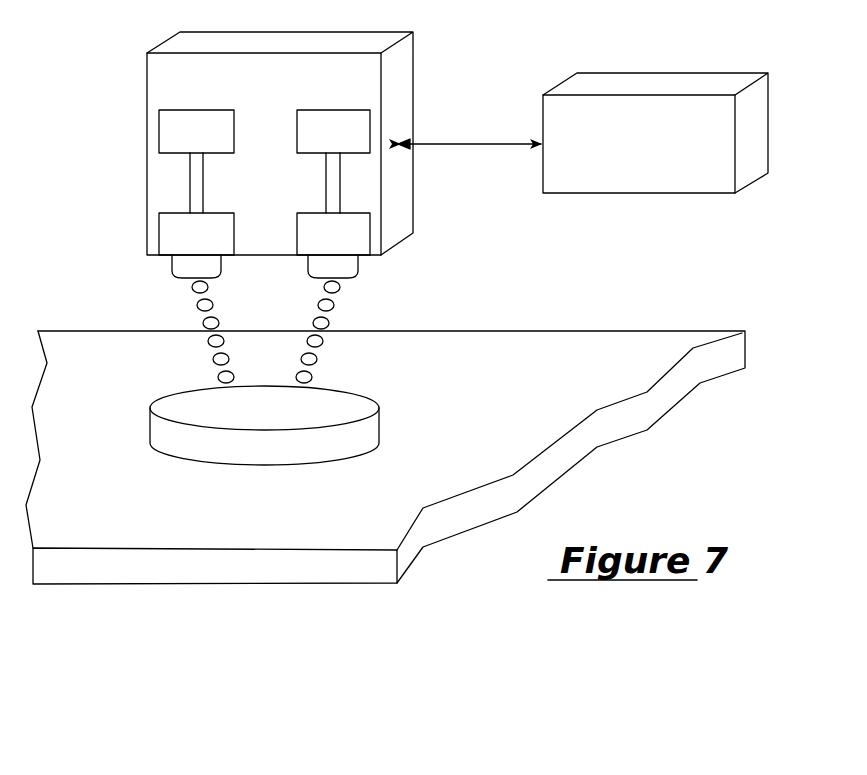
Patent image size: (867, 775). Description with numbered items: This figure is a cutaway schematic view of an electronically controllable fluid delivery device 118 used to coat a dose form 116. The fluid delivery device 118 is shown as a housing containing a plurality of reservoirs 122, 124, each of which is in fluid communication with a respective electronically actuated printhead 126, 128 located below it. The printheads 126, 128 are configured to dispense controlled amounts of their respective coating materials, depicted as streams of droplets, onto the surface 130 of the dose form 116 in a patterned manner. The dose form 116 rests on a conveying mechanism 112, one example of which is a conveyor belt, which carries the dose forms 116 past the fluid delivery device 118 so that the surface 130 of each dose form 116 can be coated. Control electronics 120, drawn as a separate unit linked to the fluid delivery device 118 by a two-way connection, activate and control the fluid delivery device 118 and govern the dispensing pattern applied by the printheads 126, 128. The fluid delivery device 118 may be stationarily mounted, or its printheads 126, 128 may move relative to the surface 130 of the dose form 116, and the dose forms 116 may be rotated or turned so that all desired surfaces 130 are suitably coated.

The conveying mechanism 112 is at (306, 584).
The dose form 116 is at (384, 423).
The electronically controllable fluid delivery device 118 is at (342, 155).
The control electronics 120 is at (654, 157).
The reservoir 122 is at (211, 142).
The reservoir 124 is at (349, 142).
The electronically actuated printhead 126 is at (211, 244).
The electronically actuated printhead 128 is at (349, 244).
The surface 130 is at (342, 410).